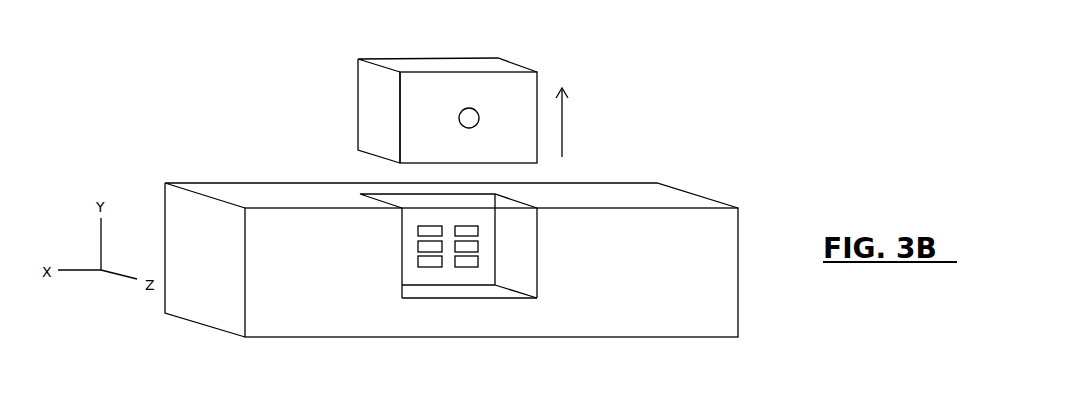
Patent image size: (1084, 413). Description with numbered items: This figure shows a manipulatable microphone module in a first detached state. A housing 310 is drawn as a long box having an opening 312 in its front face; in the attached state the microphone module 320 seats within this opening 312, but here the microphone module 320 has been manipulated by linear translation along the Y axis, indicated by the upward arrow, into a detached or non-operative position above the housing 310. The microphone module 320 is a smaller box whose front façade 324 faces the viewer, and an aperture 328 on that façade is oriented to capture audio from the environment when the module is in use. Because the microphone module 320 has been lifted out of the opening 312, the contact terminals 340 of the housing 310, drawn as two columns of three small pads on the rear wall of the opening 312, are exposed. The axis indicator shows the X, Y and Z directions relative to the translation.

The housing 310 is at (713, 296).
The opening 312 is at (516, 255).
The microphone module 320 is at (348, 77).
The front façade 324 is at (415, 98).
The aperture 328 is at (469, 118).
The contact terminals 340 is at (428, 230).